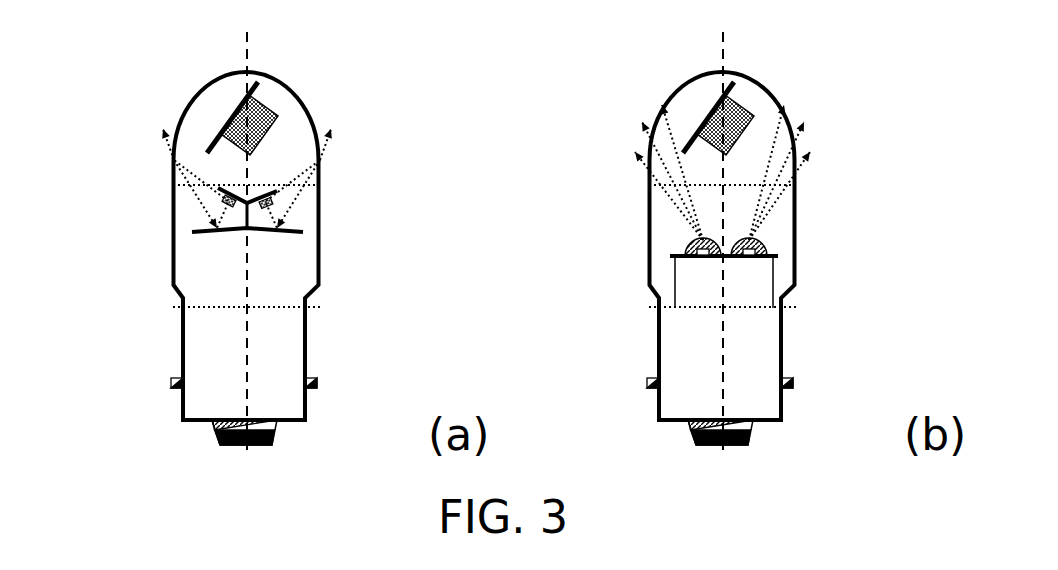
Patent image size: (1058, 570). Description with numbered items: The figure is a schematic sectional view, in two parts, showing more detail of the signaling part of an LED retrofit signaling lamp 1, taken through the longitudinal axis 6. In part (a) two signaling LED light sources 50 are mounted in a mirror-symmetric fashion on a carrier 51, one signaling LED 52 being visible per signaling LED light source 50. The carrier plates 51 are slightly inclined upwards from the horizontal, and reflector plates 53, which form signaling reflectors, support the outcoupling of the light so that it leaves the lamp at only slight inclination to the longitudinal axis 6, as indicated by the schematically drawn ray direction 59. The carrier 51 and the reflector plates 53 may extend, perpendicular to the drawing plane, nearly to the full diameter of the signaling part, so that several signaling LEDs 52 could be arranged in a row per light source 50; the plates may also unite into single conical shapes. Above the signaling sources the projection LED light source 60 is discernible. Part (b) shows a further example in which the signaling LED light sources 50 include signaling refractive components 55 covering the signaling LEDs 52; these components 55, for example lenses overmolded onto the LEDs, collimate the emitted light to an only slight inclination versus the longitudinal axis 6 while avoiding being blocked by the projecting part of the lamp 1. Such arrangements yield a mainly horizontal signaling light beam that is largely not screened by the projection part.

The LED retrofit signaling lamp 1 is at (131, 106).
The longitudinal axis 6 is at (250, 50).
The signaling LED light source 50 is at (394, 216).
The carrier plate 51 is at (255, 232).
The signaling LED 52 is at (273, 198).
The reflector plate 53 is at (288, 233).
The signaling refractive component 55 is at (766, 238).
The ray direction 59 is at (322, 143).
The projection LED light source 60 is at (268, 102).